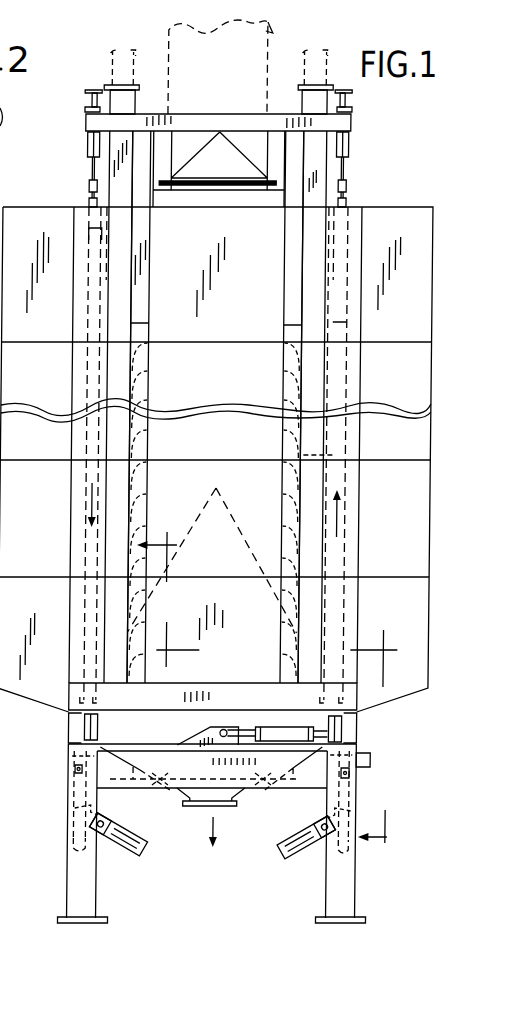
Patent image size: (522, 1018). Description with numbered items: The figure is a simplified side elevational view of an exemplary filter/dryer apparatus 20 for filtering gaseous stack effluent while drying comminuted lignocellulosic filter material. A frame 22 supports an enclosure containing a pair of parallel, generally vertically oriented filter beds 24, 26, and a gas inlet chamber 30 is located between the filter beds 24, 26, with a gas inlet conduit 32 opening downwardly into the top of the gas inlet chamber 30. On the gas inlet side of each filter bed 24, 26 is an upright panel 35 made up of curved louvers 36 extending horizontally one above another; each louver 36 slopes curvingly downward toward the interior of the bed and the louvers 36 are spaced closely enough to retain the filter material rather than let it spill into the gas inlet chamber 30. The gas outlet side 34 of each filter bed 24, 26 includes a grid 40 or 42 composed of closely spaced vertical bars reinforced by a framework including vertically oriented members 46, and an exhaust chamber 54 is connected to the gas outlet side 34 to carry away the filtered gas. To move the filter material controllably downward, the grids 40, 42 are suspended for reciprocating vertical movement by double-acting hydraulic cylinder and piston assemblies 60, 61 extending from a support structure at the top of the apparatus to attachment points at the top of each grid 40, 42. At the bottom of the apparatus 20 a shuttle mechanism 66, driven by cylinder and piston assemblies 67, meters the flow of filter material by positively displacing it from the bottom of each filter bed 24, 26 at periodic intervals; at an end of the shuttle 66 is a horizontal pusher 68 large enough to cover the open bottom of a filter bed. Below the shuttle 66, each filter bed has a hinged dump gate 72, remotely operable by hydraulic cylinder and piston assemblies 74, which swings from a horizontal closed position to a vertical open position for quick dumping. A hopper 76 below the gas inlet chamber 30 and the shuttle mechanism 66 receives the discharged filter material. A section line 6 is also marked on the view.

The section line 6- 6 is at (269, 694).
The filter/dryer apparatus 20 is at (380, 184).
The frame 22 is at (71, 748).
The filter bed 24 is at (330, 425).
The filter bed 26 is at (149, 433).
The gas inlet chamber 30 is at (172, 230).
The gas inlet conduit 32 is at (277, 25).
The gas outlet side 34 is at (149, 448).
The upright panel 35 is at (148, 371).
The curved louvers 36 is at (149, 497).
The grid 40 is at (338, 373).
The grid 42 is at (101, 383).
The vertically oriented members 46 is at (133, 445).
The exhaust chamber 54 is at (411, 278).
The double-acting hydraulic cylinder and piston assembly 60 is at (345, 148).
The double-acting hydraulic cylinder and piston assembly 61 is at (86, 143).
The shuttle mechanism 66 is at (202, 738).
The cylinder and piston assemblies of the shuttle assembly 67 is at (281, 728).
The horizontal pusher 68 is at (377, 761).
The dump gate 72 is at (166, 779).
The hydraulic cylinder and piston assemblies 74 is at (138, 853).
The hopper 76 is at (190, 793).